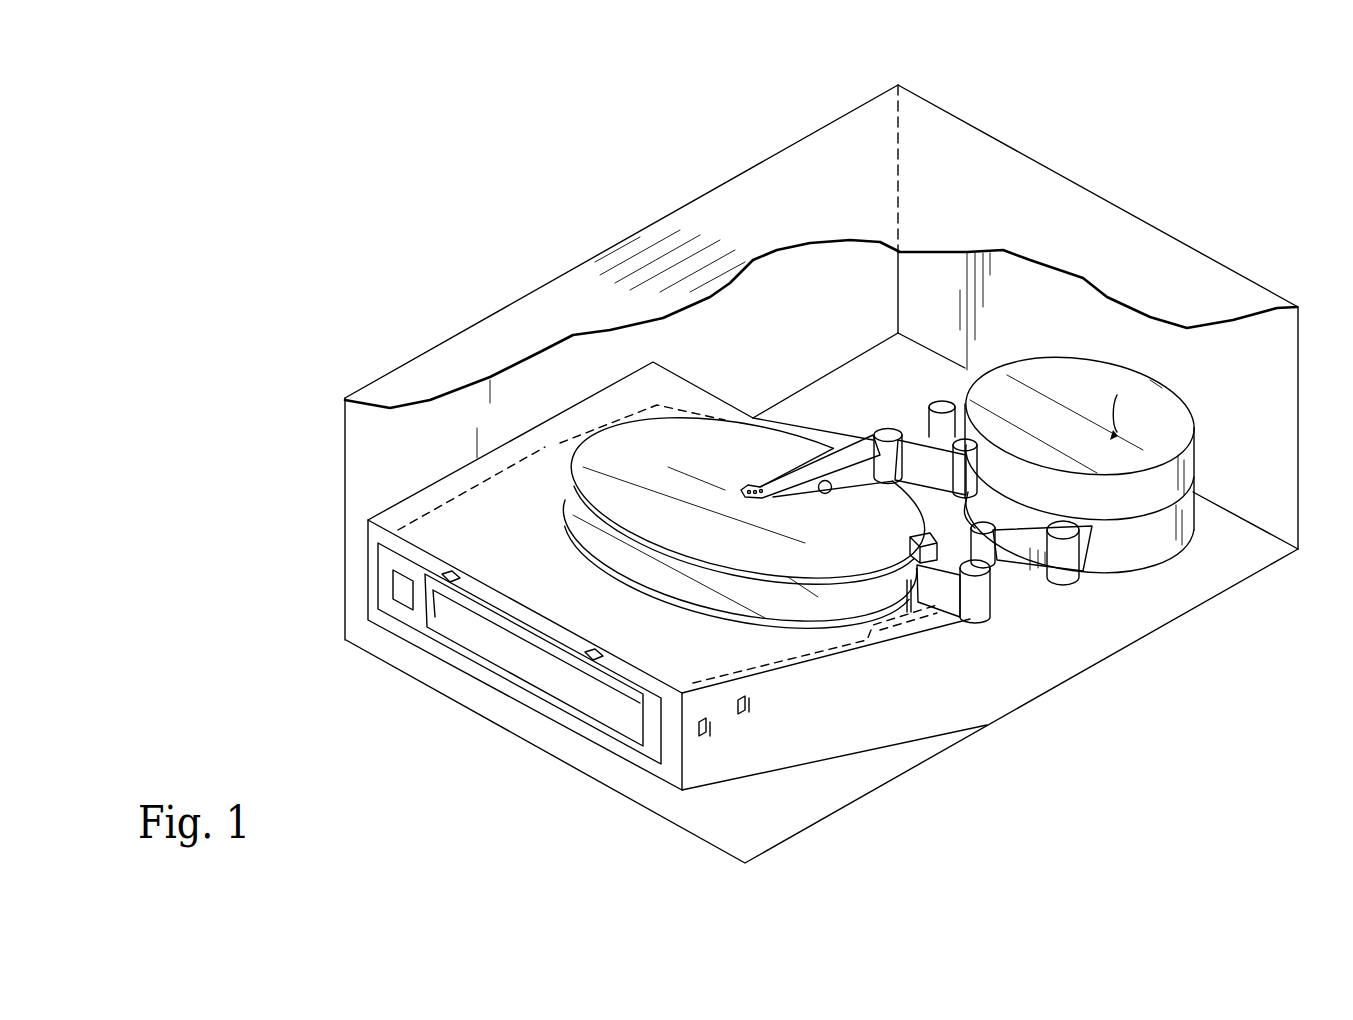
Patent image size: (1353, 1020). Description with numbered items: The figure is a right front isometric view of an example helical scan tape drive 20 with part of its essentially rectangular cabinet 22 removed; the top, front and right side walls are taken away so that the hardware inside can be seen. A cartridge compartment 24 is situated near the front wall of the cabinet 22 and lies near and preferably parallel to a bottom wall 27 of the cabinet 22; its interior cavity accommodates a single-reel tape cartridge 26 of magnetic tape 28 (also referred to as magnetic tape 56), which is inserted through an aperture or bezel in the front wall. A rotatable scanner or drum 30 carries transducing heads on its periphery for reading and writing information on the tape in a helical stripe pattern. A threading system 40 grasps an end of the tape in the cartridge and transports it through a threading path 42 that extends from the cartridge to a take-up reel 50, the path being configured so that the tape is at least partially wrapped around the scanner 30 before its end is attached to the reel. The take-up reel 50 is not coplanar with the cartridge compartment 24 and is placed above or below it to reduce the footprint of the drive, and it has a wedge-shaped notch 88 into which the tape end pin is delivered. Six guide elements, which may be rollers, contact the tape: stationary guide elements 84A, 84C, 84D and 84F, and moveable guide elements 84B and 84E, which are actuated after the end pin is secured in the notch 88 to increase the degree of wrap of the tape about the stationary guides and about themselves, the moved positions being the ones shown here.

The helical scan tape drive 20 is at (676, 353).
The cabinet 22 is at (993, 132).
The cartridge compartment 24 is at (420, 492).
The single-reel tape cartridge 26 is at (402, 610).
The bottom wall 27 is at (767, 819).
The magnetic tape 28 is at (1016, 570).
The rotatable scanner 30 is at (1173, 410).
The threading system 40 is at (1026, 654).
The threading path 42 is at (890, 410).
The take-up reel 50 is at (672, 612).
The magnetic tape 56 is at (985, 440).
The stationary guide element 84A is at (992, 565).
The moveable guide element 84B is at (995, 537).
The stationary guide element 84C is at (1080, 530).
The stationary guide element 84D is at (940, 403).
The moveable guide element 84E is at (965, 442).
The stationary guide element 84F is at (873, 425).
The wedge-shaped notch 88 is at (830, 488).